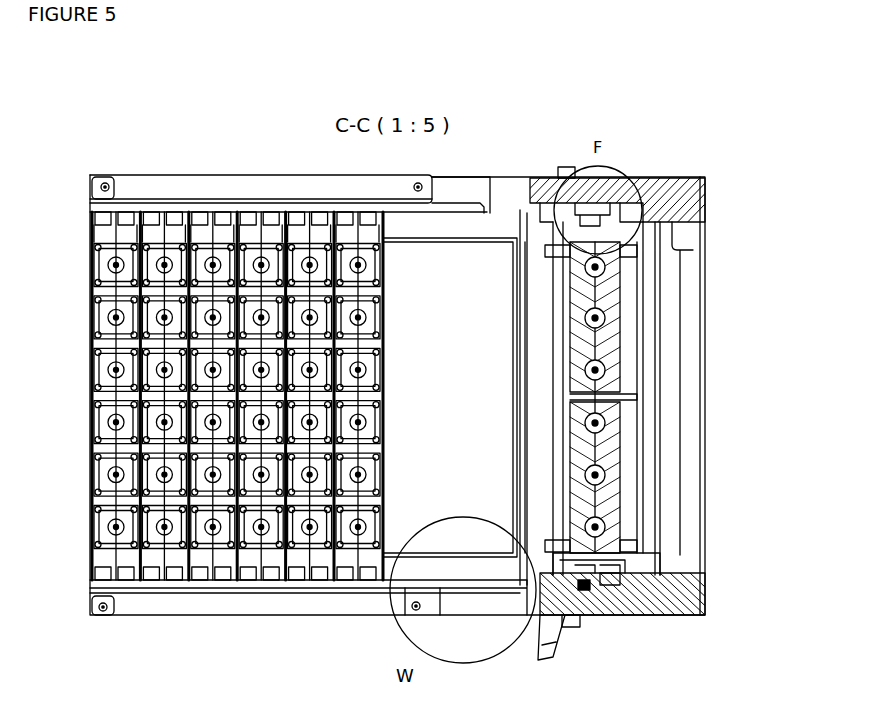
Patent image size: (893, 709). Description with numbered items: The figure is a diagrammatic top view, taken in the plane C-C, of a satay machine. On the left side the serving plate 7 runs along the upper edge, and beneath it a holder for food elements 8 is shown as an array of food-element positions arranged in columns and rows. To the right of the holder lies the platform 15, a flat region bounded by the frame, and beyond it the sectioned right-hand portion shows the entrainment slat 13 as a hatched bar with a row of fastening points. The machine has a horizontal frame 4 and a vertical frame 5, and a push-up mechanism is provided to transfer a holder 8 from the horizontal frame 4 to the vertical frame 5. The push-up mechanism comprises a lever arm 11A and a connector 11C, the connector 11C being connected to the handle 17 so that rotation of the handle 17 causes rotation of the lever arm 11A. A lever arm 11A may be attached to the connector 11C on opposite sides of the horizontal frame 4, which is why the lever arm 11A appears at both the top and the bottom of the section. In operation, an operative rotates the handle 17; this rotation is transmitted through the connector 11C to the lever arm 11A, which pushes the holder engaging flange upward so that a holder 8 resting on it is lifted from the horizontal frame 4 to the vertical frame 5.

The horizontal frame 4 is at (470, 177).
The vertical frame 5 is at (660, 177).
The serving plate 7 is at (175, 185).
The holder for food elements 8 is at (272, 232).
The lever arm 11A is at (548, 215).
The connector 11C is at (633, 616).
The entrainment slat 13 is at (612, 296).
The platform 15 is at (492, 273).
The handle 17 is at (555, 645).